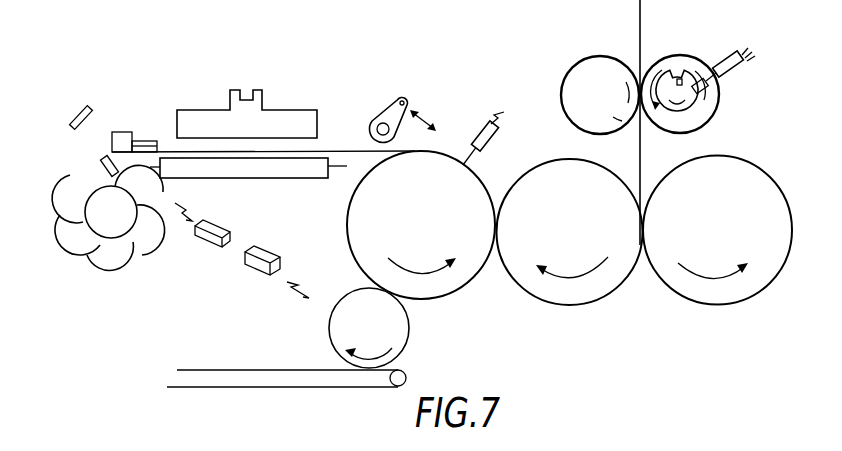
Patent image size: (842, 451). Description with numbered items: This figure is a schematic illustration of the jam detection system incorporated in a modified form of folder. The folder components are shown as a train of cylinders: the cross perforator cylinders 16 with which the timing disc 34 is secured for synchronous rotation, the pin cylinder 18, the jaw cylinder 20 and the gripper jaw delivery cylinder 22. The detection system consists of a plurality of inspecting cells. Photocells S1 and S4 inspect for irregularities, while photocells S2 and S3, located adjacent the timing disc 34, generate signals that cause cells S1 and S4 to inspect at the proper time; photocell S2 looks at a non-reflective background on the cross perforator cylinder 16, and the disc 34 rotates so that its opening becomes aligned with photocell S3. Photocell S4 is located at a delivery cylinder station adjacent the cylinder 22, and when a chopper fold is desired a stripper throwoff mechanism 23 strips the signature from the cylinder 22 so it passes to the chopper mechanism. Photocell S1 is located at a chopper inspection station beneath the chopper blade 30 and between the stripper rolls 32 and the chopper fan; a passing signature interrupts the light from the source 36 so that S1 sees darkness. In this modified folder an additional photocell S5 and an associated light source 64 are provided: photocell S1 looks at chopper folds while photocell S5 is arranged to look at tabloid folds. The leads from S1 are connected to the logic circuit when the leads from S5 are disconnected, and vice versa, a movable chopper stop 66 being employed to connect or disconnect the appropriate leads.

The cross perforator cylinders 16 is at (691, 123).
The pin cylinder 18 is at (738, 217).
The jaw cylinder 20 is at (590, 217).
The gripper jaw delivery cylinder 22 is at (440, 217).
The stripper throwoff mechanism 23 is at (386, 115).
The chopper blade 30 is at (277, 111).
The stripper rolls 32 is at (277, 177).
The timing disc 34 is at (669, 66).
The light source 36 is at (216, 225).
The light source 64 is at (100, 165).
The movable chopper stop 66 is at (128, 126).
The photocell S1 is at (273, 262).
The photocell S2 is at (707, 85).
The photocell S3 is at (703, 105).
The photocell S4 is at (483, 122).
The photocell S5 is at (80, 106).